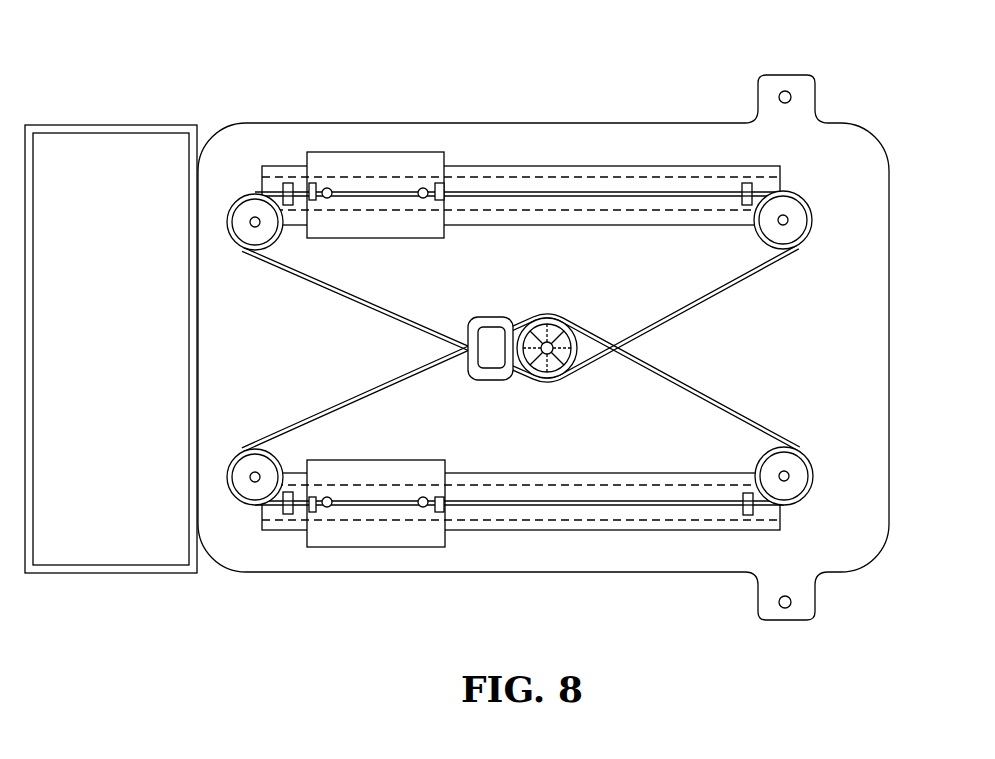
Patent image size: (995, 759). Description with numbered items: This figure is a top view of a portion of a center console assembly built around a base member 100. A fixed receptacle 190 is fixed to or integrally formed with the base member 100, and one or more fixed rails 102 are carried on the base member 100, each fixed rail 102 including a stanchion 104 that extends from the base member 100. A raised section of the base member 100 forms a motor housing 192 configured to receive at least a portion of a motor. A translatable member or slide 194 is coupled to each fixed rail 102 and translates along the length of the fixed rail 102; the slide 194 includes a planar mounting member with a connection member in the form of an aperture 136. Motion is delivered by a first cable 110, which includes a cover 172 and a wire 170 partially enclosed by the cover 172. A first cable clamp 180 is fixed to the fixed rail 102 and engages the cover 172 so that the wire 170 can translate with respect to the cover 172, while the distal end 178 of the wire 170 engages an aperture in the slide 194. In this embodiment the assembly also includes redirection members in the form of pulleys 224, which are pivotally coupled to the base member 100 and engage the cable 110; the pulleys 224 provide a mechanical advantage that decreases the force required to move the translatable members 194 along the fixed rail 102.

The base member 100 is at (762, 361).
The fixed rail 102 is at (550, 165).
The stanchion 104 is at (657, 175).
The first cable 110 is at (698, 507).
The aperture 136 is at (328, 202).
The wire 170 is at (685, 190).
The cover 172 is at (778, 258).
The distal end 178 is at (313, 185).
The first cable clamp 180 is at (750, 186).
The fixed receptacle 190 is at (92, 356).
The motor housing 192 is at (492, 383).
The slide 194 is at (372, 152).
The pulleys 224 is at (240, 195).